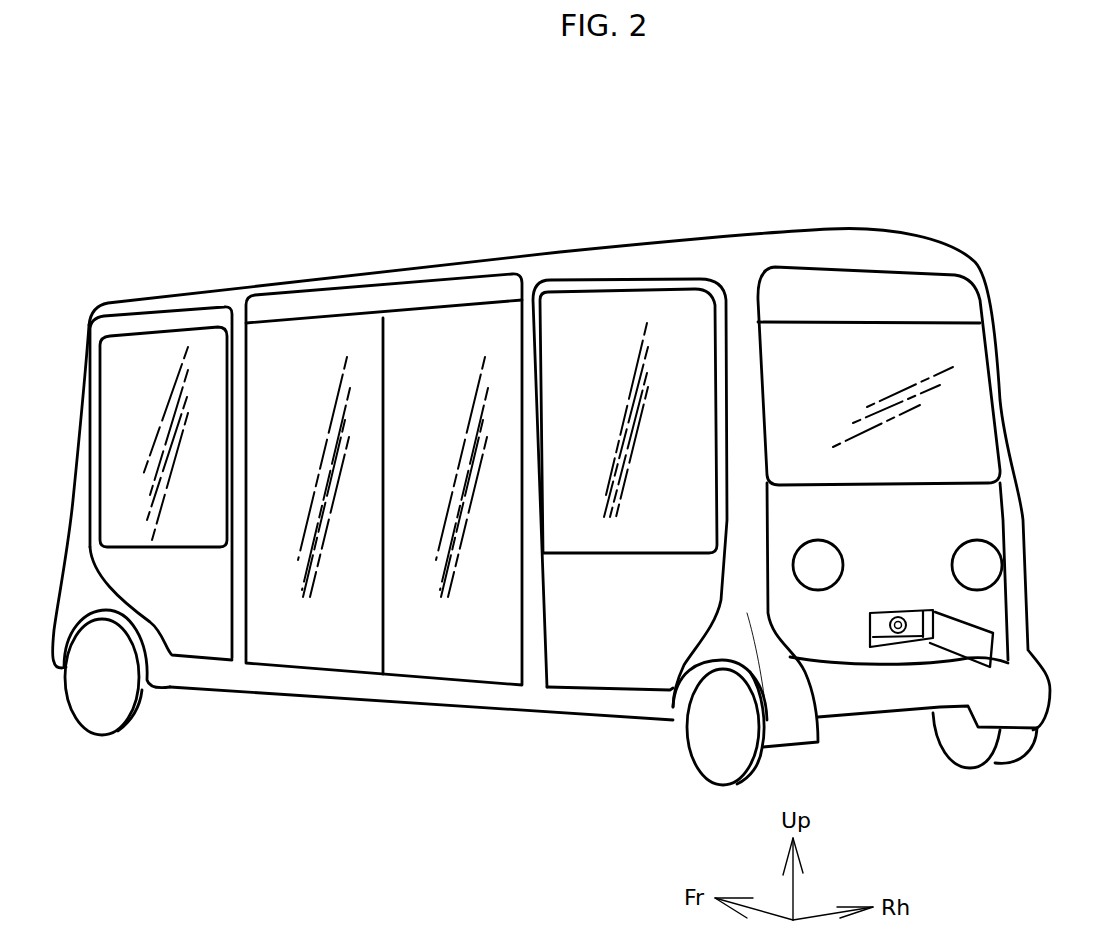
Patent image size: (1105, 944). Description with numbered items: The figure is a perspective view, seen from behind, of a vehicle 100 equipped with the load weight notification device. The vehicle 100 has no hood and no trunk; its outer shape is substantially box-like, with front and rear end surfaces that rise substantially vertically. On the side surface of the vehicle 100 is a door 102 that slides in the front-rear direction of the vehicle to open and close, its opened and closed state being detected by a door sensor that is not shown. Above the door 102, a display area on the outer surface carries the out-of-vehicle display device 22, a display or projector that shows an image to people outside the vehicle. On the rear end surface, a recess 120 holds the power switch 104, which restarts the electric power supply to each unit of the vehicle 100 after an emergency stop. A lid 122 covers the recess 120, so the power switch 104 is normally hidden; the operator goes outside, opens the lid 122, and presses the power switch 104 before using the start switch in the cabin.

The vehicle 100 is at (478, 187).
The out-of-vehicle display device 22 is at (341, 292).
The door 102 is at (413, 658).
The recess 120 is at (877, 630).
The power switch 104 is at (918, 633).
The lid 122 is at (977, 634).